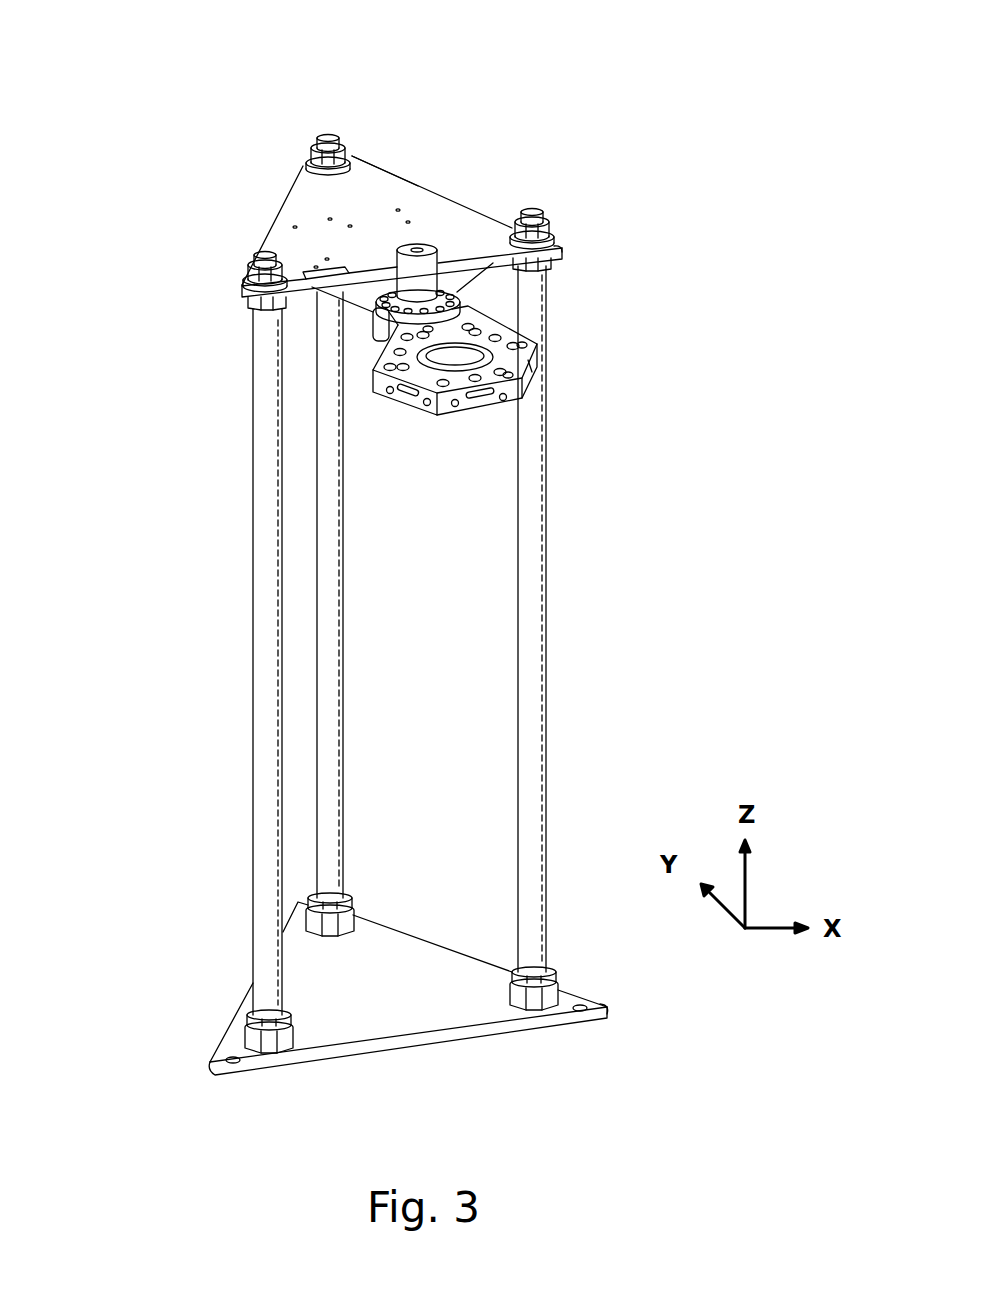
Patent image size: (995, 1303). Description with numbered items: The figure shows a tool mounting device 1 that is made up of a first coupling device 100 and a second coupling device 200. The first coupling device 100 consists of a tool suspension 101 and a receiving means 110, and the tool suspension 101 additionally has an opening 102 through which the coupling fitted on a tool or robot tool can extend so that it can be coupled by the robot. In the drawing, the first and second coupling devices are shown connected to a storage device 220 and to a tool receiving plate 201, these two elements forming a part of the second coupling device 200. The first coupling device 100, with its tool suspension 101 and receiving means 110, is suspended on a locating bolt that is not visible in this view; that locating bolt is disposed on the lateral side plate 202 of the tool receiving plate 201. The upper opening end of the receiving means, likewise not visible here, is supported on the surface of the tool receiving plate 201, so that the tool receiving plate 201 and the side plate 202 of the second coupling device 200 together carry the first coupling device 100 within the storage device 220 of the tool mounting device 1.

The tool mounting device 1 is at (248, 190).
The first coupling device 100 is at (438, 434).
The tool suspension 101 is at (392, 400).
The opening 102 is at (478, 414).
The receiving means 110 is at (458, 291).
The second coupling device 200 is at (499, 197).
The tool receiving plate 201 is at (418, 180).
The lateral side plate 202 is at (345, 295).
The storage device 220 is at (238, 618).